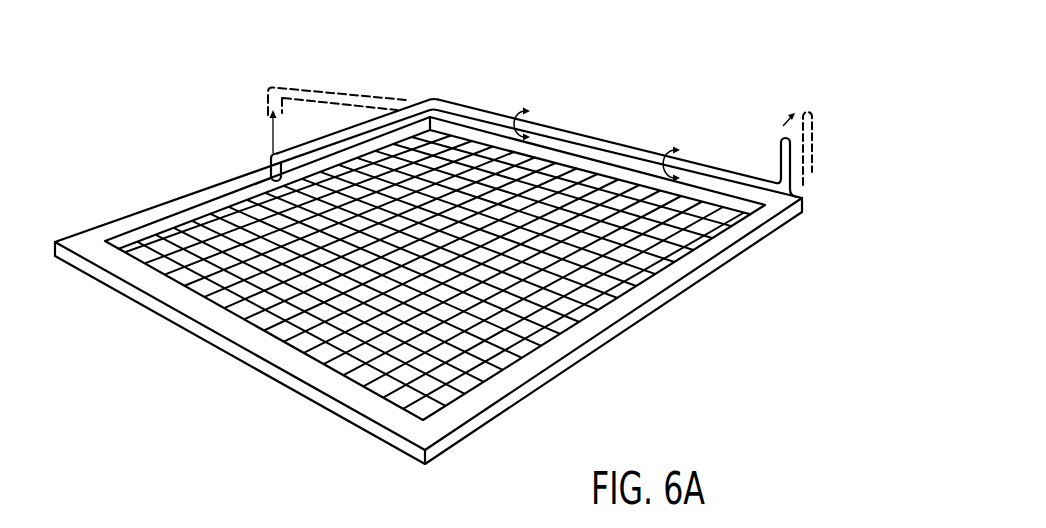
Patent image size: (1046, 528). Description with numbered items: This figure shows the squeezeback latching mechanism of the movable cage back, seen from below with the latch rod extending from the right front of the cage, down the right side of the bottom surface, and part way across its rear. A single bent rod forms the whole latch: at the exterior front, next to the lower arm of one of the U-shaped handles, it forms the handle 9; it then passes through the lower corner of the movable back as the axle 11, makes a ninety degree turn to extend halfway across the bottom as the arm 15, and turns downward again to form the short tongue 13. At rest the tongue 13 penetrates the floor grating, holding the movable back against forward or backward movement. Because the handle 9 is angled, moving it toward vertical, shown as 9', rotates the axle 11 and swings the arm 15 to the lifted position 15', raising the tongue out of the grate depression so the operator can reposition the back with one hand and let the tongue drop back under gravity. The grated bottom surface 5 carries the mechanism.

The frame 5 is at (803, 209).
The handle 9 is at (831, 167).
The rotated handle position 9' is at (848, 138).
The axle 11 is at (567, 135).
The tongue 13 is at (270, 159).
The arm 15 is at (362, 96).
The lifted tongue position 15' is at (337, 79).